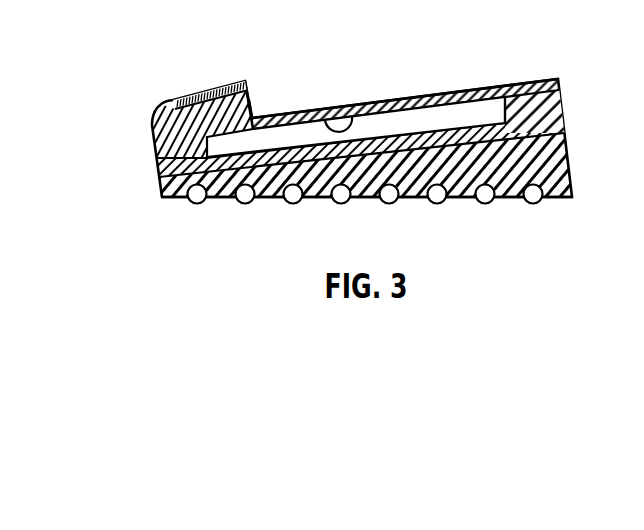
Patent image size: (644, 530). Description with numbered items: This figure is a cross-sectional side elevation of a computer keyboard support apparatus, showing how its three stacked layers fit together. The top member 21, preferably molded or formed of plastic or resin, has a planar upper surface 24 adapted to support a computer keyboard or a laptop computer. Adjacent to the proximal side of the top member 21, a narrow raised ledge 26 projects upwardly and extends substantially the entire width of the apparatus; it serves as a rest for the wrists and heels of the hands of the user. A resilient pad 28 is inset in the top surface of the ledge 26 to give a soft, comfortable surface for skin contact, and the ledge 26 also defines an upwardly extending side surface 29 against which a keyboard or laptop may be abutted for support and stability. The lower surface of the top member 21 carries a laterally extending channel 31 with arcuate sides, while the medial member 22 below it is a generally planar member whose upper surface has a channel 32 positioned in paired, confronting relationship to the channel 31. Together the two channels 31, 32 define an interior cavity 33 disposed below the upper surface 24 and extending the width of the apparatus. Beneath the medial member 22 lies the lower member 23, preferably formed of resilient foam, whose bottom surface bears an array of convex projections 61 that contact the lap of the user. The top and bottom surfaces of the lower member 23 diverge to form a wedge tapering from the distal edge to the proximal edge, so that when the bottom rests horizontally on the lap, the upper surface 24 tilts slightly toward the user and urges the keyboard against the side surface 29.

The top member 21 is at (152, 128).
The medial member 22 is at (155, 161).
The lower member 23 is at (160, 198).
The planar upper surface 24 is at (472, 91).
The raised ledge 26 is at (241, 81).
The resilient pad 28 is at (193, 100).
The side surface 29 is at (252, 107).
The channel 31 is at (351, 113).
The channel 32 is at (485, 125).
The interior cavity 33 is at (403, 125).
The convex projections 61 is at (307, 203).